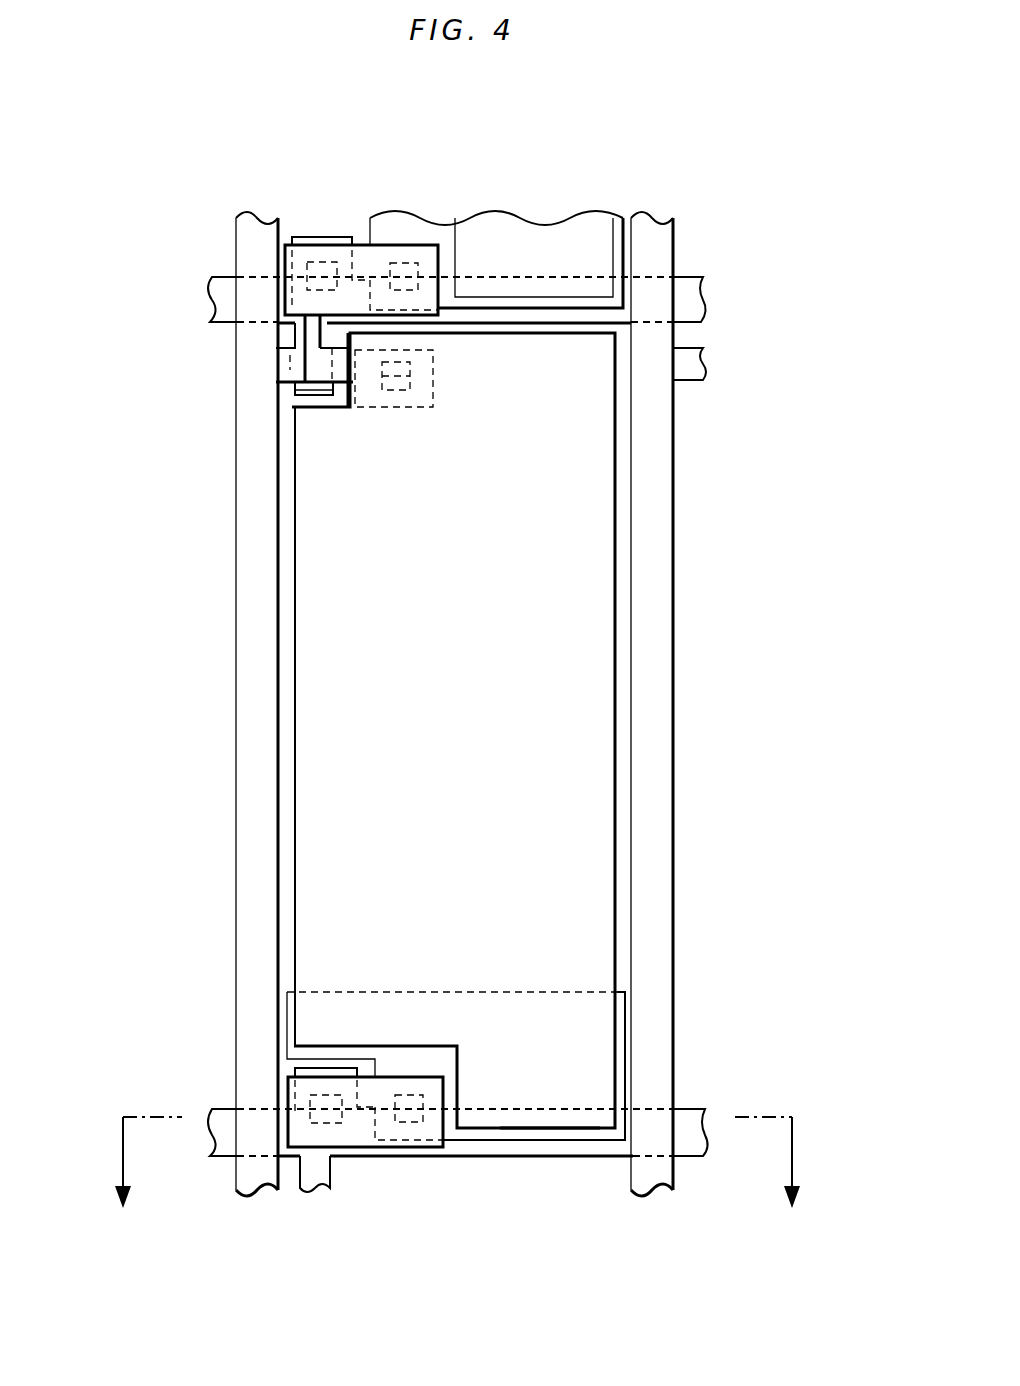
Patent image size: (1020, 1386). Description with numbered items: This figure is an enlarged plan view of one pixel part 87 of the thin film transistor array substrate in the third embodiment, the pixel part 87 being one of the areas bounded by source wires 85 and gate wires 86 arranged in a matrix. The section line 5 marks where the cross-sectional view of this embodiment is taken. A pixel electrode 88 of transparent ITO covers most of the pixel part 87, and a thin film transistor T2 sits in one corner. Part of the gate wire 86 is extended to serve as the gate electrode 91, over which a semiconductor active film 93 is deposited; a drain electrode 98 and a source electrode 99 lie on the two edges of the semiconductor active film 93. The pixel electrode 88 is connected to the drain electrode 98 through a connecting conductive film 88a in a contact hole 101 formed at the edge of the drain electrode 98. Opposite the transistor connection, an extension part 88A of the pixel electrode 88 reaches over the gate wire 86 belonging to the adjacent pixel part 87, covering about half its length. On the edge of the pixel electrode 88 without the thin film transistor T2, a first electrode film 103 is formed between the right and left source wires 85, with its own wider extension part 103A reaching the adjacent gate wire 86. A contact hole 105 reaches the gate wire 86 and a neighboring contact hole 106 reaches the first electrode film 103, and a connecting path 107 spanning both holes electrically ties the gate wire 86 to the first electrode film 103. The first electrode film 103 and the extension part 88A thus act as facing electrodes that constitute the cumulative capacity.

The source wire 85 is at (250, 776).
The gate wire 86 is at (690, 290).
The pixel part 87 is at (583, 197).
The pixel electrode 88 is at (600, 878).
The connecting conductive film 88a is at (433, 378).
The extension part 88A is at (543, 1128).
The gate electrode 91 is at (310, 332).
The semiconductor active film 93 is at (290, 386).
The drain electrode 98 is at (342, 372).
The source electrode 99 is at (293, 368).
The contact hole 101 is at (396, 378).
The first electrode film 103 is at (320, 1018).
The extension part 103A is at (512, 1140).
The contact hole 105 is at (318, 262).
The contact hole 106 is at (405, 262).
The connecting path 107 is at (358, 258).
The thin film transistor T2 is at (270, 383).
The section line 5 is at (456, 1190).